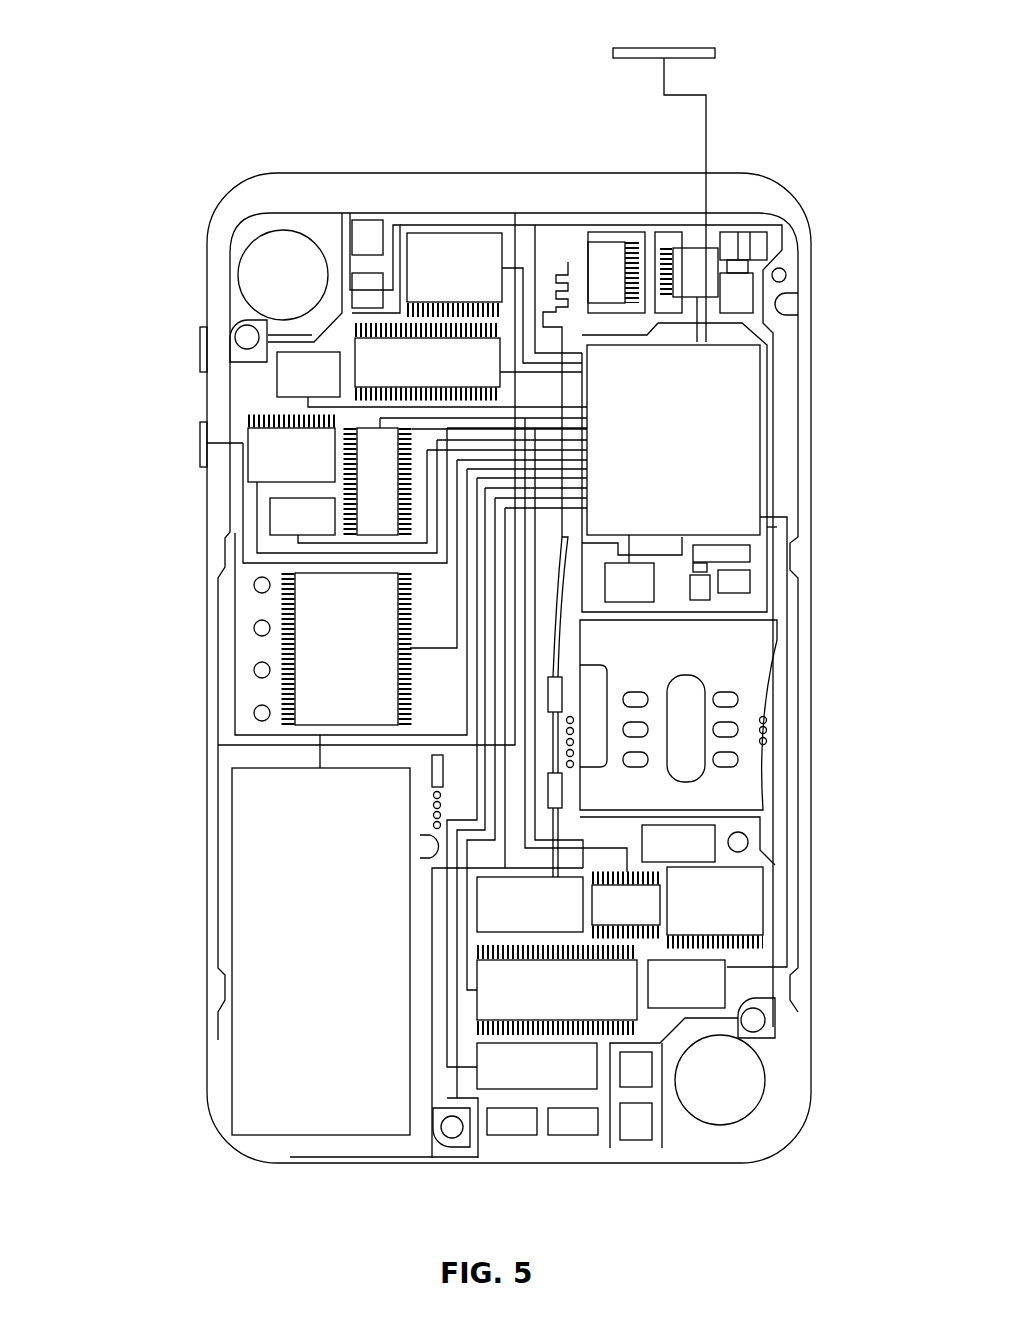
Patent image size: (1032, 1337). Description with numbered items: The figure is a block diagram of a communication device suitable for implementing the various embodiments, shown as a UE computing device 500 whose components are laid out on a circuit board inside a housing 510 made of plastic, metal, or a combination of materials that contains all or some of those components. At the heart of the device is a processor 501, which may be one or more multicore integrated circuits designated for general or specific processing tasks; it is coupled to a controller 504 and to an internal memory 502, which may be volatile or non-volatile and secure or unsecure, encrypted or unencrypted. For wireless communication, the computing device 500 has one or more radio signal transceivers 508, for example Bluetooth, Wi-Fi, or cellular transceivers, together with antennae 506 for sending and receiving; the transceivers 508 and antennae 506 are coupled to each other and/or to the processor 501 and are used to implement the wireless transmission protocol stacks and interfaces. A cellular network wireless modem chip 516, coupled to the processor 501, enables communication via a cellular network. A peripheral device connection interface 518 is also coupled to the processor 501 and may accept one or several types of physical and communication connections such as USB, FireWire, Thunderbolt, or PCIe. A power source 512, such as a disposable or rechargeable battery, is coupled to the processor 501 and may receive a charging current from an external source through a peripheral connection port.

The computing device 500 is at (150, 88).
The processor 501 is at (692, 452).
The internal memory 502 is at (447, 373).
The controller 504 is at (474, 279).
The antennae 506 is at (706, 130).
The radio signal transceivers 508 is at (710, 248).
The housing 510 is at (812, 1010).
The power source 512 is at (339, 961).
The cellular network wireless modem chip 516 is at (575, 1001).
The peripheral device connection interface 518 is at (555, 1076).